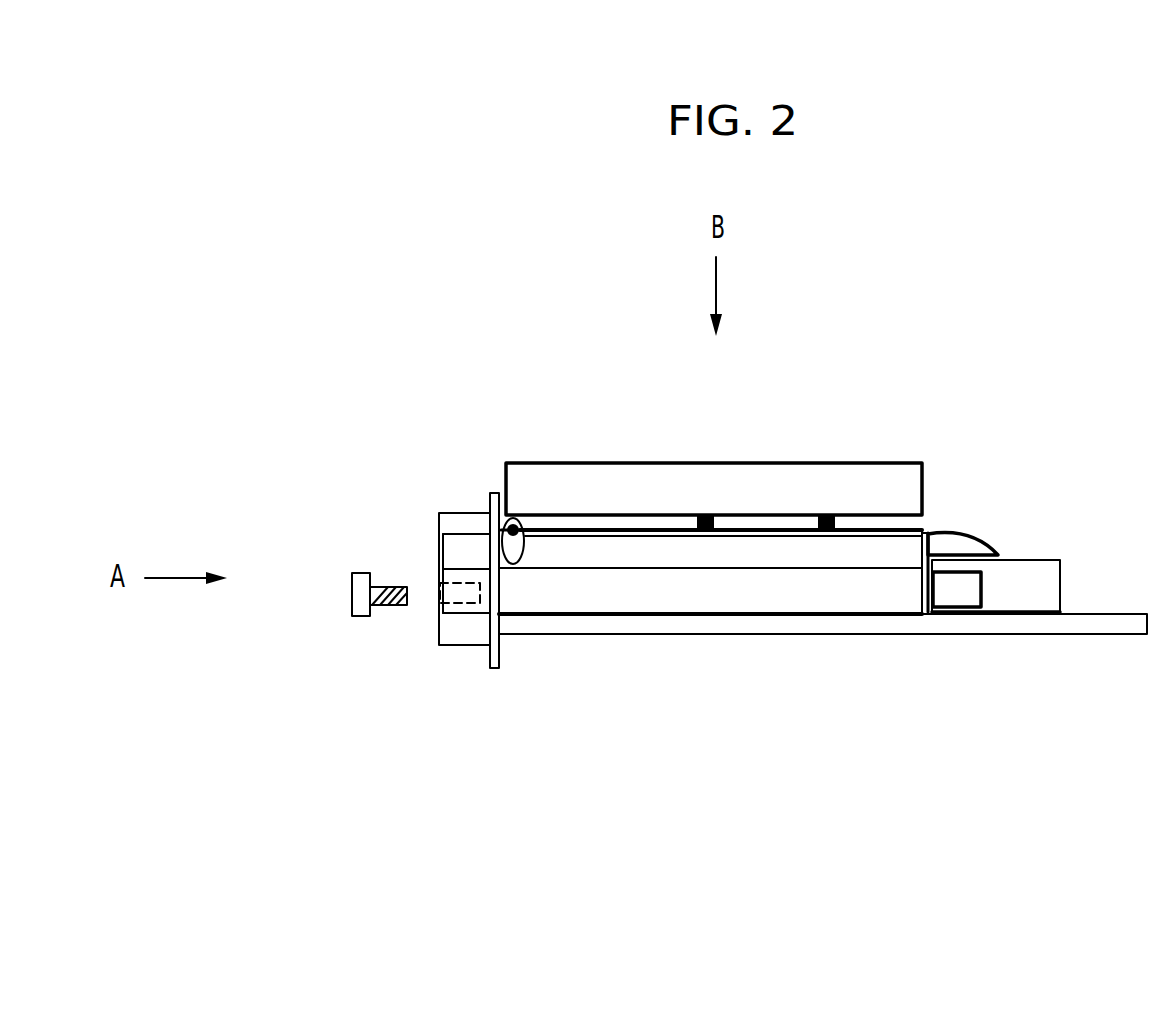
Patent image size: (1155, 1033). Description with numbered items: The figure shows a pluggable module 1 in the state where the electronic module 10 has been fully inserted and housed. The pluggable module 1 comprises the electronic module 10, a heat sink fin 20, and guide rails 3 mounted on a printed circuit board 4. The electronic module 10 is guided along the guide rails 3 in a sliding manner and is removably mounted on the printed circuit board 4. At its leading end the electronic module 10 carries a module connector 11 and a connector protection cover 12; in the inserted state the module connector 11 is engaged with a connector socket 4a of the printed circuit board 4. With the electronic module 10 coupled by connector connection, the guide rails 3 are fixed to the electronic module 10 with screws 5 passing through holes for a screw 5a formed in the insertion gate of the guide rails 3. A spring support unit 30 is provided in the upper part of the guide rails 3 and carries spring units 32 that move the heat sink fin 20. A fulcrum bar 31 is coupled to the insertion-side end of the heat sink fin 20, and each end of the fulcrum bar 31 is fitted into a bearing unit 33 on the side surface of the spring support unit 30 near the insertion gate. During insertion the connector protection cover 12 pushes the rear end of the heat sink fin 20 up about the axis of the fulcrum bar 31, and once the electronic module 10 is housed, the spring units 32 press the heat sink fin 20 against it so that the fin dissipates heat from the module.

The pluggable module 1 is at (974, 278).
The guide rails 3 is at (862, 587).
The printed circuit board 4 is at (1076, 634).
The connector socket 4a is at (1035, 561).
The screws 5 is at (350, 598).
The holes for a screw 5a is at (460, 613).
The electronic module 10 is at (465, 533).
The module connector 11 is at (951, 613).
The connector protection cover 12 is at (957, 533).
The heat sink fin 20 is at (598, 463).
The spring support unit 30 is at (620, 550).
The fulcrum bar 31 is at (515, 522).
The spring units 32 is at (713, 518).
The bearing unit 33 is at (521, 558).